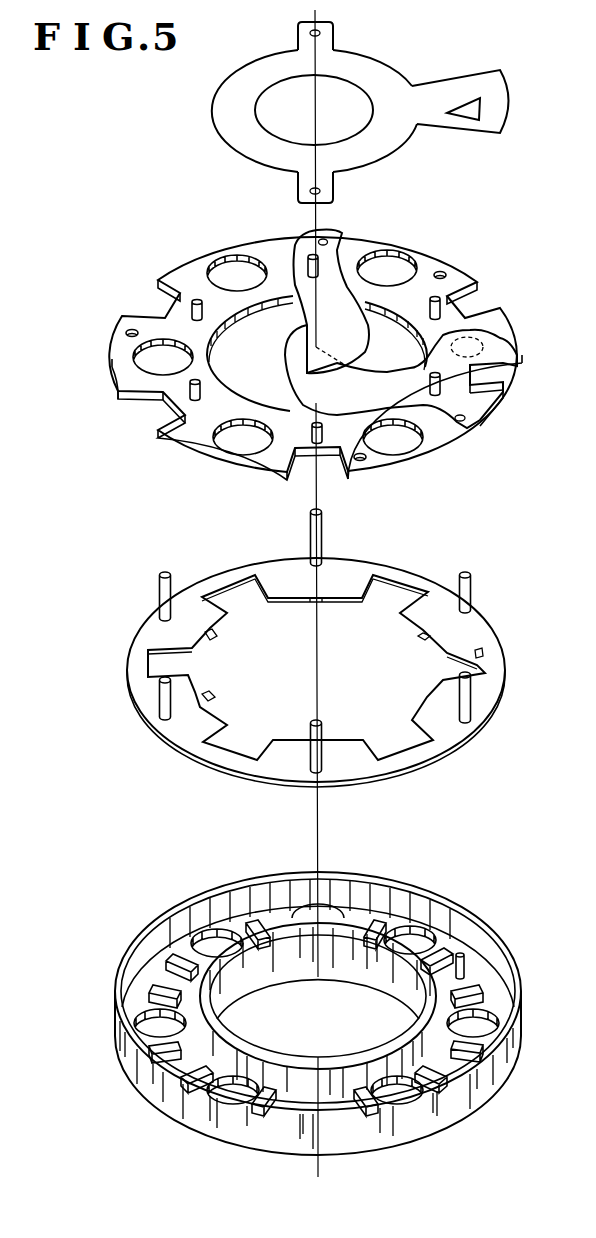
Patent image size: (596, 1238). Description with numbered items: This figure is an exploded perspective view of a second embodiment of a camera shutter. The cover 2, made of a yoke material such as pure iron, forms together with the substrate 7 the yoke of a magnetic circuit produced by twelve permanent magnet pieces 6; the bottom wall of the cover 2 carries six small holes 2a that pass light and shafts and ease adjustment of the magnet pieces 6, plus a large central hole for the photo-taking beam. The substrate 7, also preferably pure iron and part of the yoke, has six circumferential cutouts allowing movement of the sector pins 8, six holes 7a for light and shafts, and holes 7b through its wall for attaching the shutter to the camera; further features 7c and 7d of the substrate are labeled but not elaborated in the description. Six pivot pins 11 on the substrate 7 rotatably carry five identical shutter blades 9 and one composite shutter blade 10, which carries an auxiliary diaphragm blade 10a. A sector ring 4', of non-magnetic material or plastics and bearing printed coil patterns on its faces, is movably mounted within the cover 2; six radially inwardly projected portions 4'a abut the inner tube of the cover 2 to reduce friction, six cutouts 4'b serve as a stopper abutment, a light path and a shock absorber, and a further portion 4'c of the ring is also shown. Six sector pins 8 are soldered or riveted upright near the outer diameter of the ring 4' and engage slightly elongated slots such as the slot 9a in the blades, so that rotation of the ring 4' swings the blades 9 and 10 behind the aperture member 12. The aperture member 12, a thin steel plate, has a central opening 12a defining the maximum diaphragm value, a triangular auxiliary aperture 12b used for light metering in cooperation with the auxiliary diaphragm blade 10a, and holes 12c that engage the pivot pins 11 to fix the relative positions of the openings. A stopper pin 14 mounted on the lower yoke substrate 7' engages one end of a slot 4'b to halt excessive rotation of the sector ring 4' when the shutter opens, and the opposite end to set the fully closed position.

The cover 2 is at (500, 1073).
The small holes 2a is at (430, 940).
The sector ring 4' is at (328, 672).
The radially inwardly projected portions 4'a is at (406, 654).
The cutouts 4'b is at (316, 685).
The tab of stator ring 4'c is at (512, 653).
The permanent magnet pieces 6 is at (153, 407).
The substrate 7 is at (315, 358).
The lower yoke substrate 7' is at (375, 1010).
The holes 7a is at (410, 447).
The holes 7b is at (400, 320).
The notch of support plate 7c is at (477, 307).
The small hole of support plate 7d is at (445, 274).
The sector pins 8 is at (471, 583).
The shutter blades 9 is at (342, 254).
The slot 9a is at (319, 239).
The shutter blade 10 is at (462, 403).
The auxiliary diaphragm blade 10a is at (498, 357).
The pivot pins 11 is at (307, 266).
The aperture member 12 is at (390, 83).
The central opening 12a is at (358, 80).
The auxiliary aperture 12b is at (470, 100).
The holes 12c is at (326, 33).
The stopper pin 14 is at (466, 960).